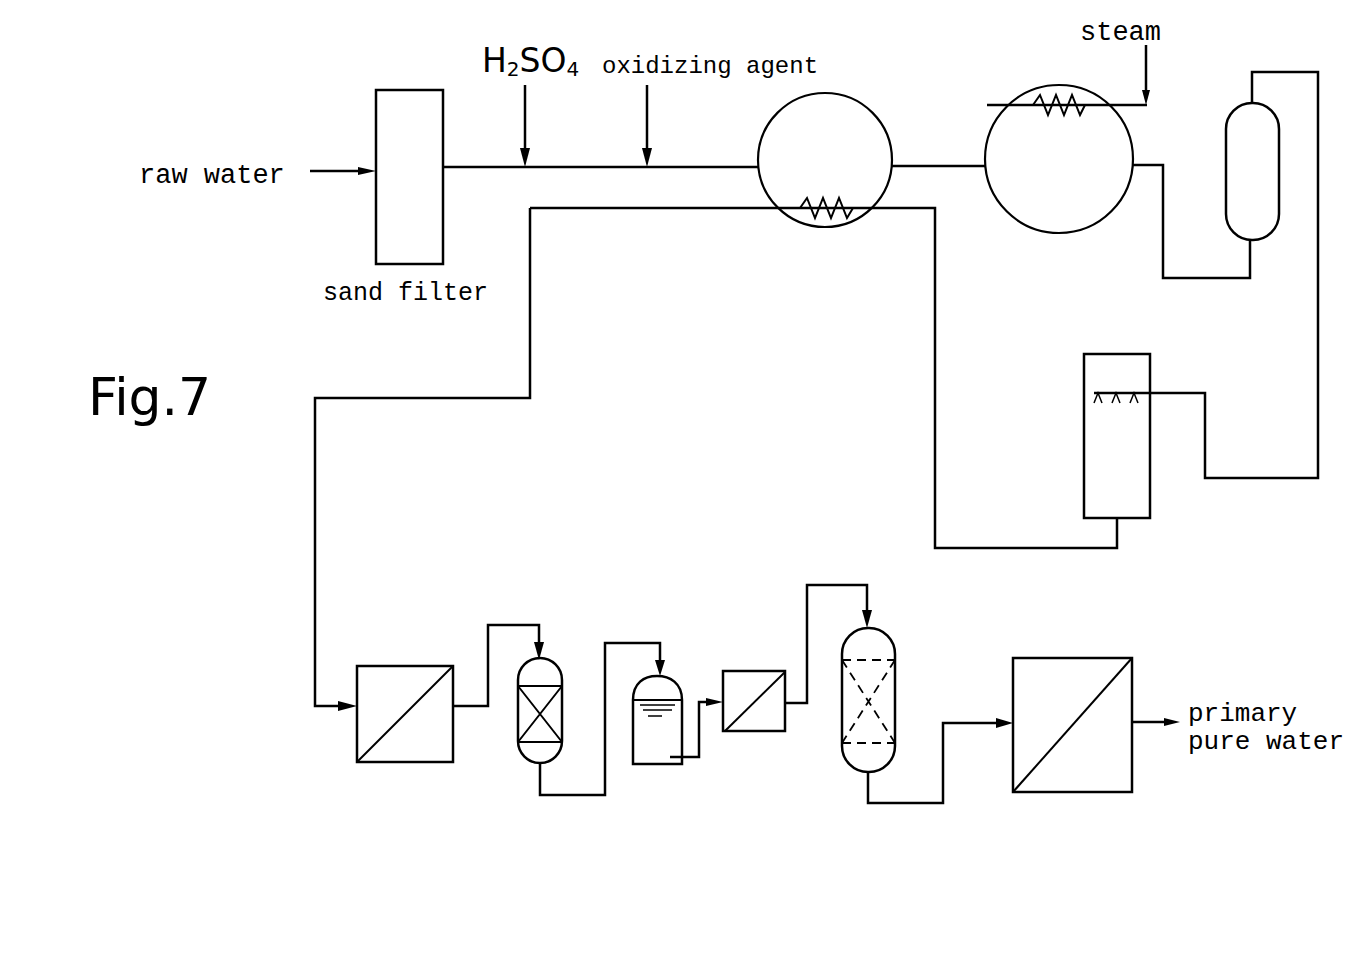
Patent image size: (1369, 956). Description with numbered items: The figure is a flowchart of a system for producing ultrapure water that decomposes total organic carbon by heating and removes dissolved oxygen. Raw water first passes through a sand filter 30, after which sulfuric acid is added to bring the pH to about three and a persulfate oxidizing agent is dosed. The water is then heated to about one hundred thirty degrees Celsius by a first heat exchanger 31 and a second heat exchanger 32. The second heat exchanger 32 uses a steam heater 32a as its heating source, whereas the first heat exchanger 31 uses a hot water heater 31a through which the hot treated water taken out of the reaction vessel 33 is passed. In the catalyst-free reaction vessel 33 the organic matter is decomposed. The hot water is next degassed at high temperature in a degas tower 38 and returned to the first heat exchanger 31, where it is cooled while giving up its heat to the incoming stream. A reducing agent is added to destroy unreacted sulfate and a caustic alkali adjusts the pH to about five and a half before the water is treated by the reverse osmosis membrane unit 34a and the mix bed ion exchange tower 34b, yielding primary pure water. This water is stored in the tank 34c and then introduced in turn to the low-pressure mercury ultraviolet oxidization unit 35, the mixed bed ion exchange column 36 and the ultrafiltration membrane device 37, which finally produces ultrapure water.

The sand filter 30 is at (402, 90).
The first heat exchanger 31 is at (845, 93).
The hot water heater 31a is at (830, 204).
The second heat exchanger 32 is at (1020, 100).
The steam heater 32a is at (1057, 118).
The reaction vessel 33 is at (1228, 113).
The reverse osmosis membrane unit 34a is at (407, 762).
The mix bed ion exchange tower 34b is at (525, 763).
The tank 34c is at (650, 764).
The low-pressure mercury ultraviolet oxidization unit 35 is at (750, 731).
The mixed bed ion exchange column 36 is at (842, 765).
The ultrafiltration membrane device 37 is at (1073, 792).
The degas tower 38 is at (1150, 510).